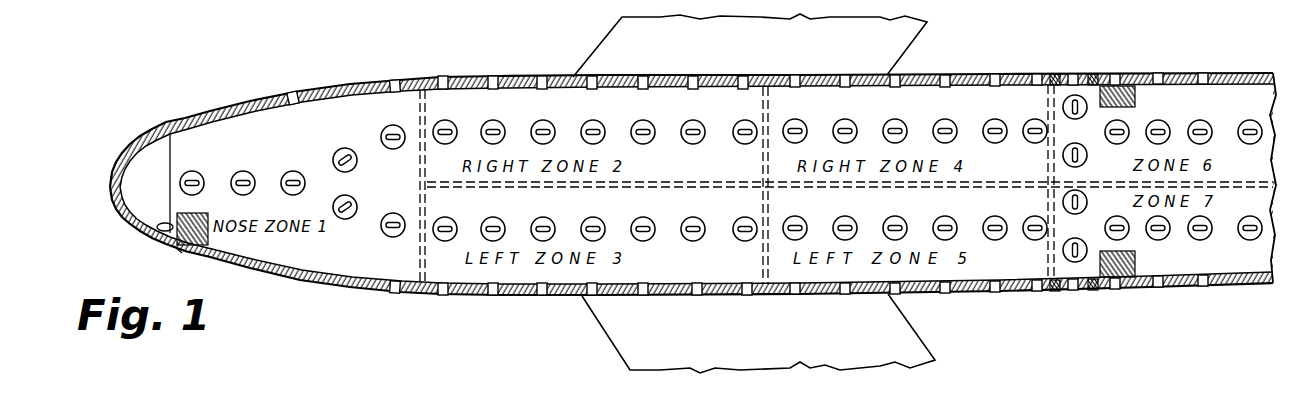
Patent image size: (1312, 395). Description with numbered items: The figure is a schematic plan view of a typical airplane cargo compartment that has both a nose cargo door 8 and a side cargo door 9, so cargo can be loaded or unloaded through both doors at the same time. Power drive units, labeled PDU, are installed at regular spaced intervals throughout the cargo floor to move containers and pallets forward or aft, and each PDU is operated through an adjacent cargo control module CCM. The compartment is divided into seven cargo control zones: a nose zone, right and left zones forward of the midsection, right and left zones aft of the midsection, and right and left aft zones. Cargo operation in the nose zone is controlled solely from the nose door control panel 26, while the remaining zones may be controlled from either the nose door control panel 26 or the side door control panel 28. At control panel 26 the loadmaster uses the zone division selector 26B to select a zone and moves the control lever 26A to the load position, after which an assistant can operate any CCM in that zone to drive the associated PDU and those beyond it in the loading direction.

The nose cargo door 8 is at (693, 193).
The side cargo door 9 is at (1091, 292).
The nose door control panel 26 is at (210, 238).
The control lever 26A is at (178, 252).
The zone division selector 26B is at (158, 226).
The side door control panel 28 is at (1133, 277).
The power drive unit PDU is at (333, 153).
The cargo control module CCM is at (642, 92).